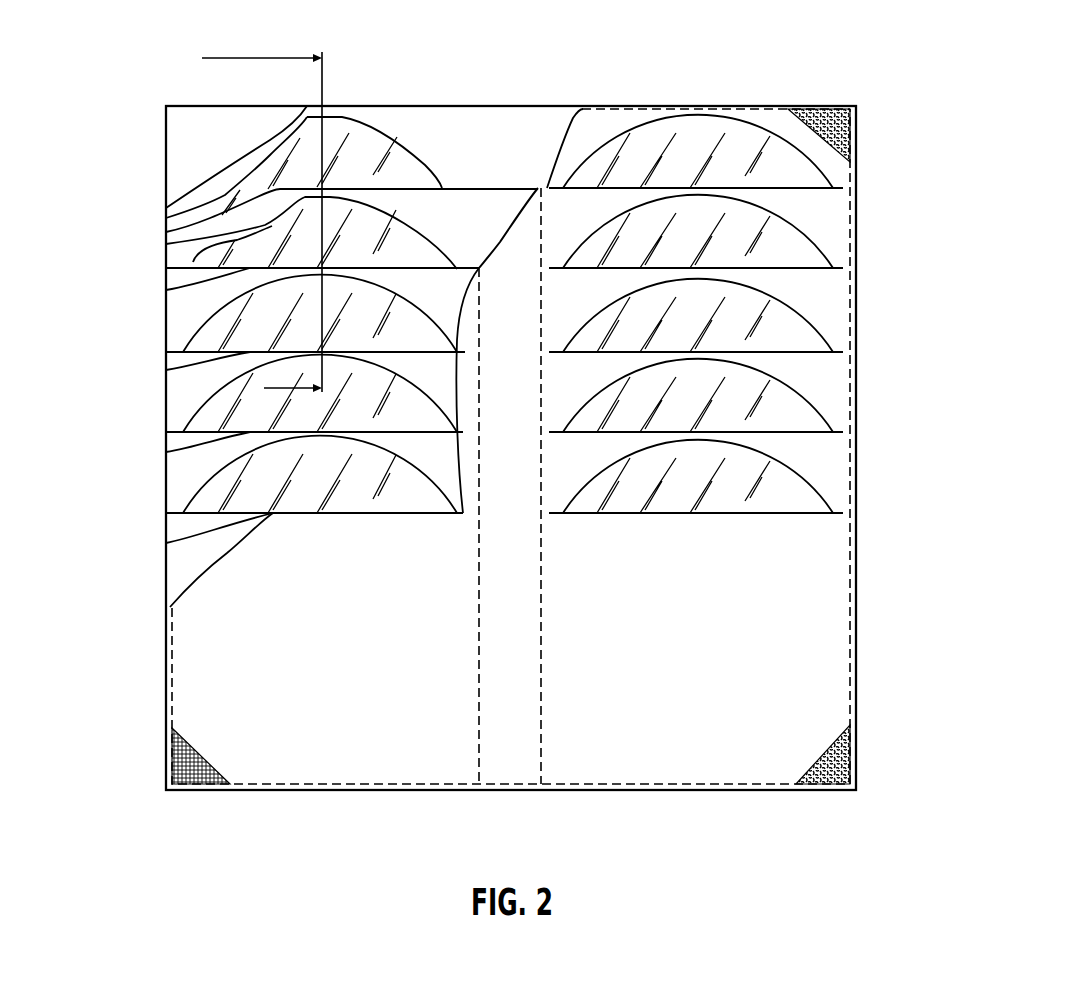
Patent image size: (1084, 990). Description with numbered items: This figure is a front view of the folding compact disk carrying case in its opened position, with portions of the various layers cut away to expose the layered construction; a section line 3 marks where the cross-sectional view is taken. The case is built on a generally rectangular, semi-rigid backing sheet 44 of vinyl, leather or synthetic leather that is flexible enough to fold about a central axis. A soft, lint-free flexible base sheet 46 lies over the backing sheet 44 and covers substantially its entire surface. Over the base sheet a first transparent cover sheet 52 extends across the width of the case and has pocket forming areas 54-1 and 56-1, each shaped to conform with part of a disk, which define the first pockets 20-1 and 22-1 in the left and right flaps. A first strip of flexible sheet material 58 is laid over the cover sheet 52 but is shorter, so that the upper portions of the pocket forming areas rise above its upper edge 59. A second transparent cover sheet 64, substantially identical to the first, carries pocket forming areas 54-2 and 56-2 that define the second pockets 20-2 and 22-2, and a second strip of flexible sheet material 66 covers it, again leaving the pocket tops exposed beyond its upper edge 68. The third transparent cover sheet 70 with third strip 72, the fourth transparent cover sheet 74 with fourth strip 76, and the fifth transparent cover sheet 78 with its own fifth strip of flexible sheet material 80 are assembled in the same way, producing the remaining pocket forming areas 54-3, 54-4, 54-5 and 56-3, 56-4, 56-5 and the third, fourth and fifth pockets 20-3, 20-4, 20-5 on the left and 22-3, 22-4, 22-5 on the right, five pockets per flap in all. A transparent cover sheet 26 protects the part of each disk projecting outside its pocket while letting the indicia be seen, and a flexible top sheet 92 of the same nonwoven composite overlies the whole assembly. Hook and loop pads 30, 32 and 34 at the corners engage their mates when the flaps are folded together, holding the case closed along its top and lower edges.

The section line 3- 3 is at (249, 223).
The first pocket 20-1 is at (212, 190).
The second pocket 20-2 is at (198, 269).
The third pocket 20-3 is at (195, 353).
The fourth pocket 20-4 is at (203, 432).
The fifth pocket 20-5 is at (207, 512).
The first pocket 22-1 is at (782, 187).
The second pocket 22-2 is at (782, 267).
The third pocket 22-3 is at (782, 351).
The fourth pocket 22-4 is at (782, 431).
The fifth pocket 22-5 is at (782, 512).
The cover sheet 26 is at (737, 140).
The hook and loop pad 30 is at (845, 125).
The hook and loop pad 32 is at (187, 773).
The hook and loop pad 34 is at (848, 785).
The backing sheet 44 is at (193, 130).
The flexible base sheet 46 is at (195, 202).
The first transparent cover sheet 52 is at (202, 222).
The pocket forming area 54-1 is at (340, 130).
The pocket forming area 54-2 is at (373, 227).
The pocket forming area 54-3 is at (373, 303).
The pocket forming area 54-4 is at (375, 385).
The pocket forming area 54-5 is at (375, 465).
The pocket forming area 56-1 is at (692, 128).
The pocket forming area 56-2 is at (613, 228).
The pocket forming area 56-3 is at (613, 312).
The pocket forming area 56-4 is at (613, 397).
The pocket forming area 56-5 is at (613, 481).
The first strip of flexible sheet material 58 is at (232, 231).
The upper edge 59 is at (423, 162).
The second transparent cover sheet 64 is at (166, 289).
The second strip of flexible sheet material 66 is at (190, 298).
The upper edge 68 is at (407, 267).
The third transparent cover sheet 70 is at (166, 370).
The third strip of flexible sheet material 72 is at (183, 381).
The fourth transparent cover sheet 74 is at (166, 452).
The fourth strip of flexible sheet material 76 is at (190, 463).
The fifth transparent cover sheet 78 is at (166, 543).
The lower pocket sheet edge 80 is at (177, 562).
The flexible top sheet 92 is at (213, 620).